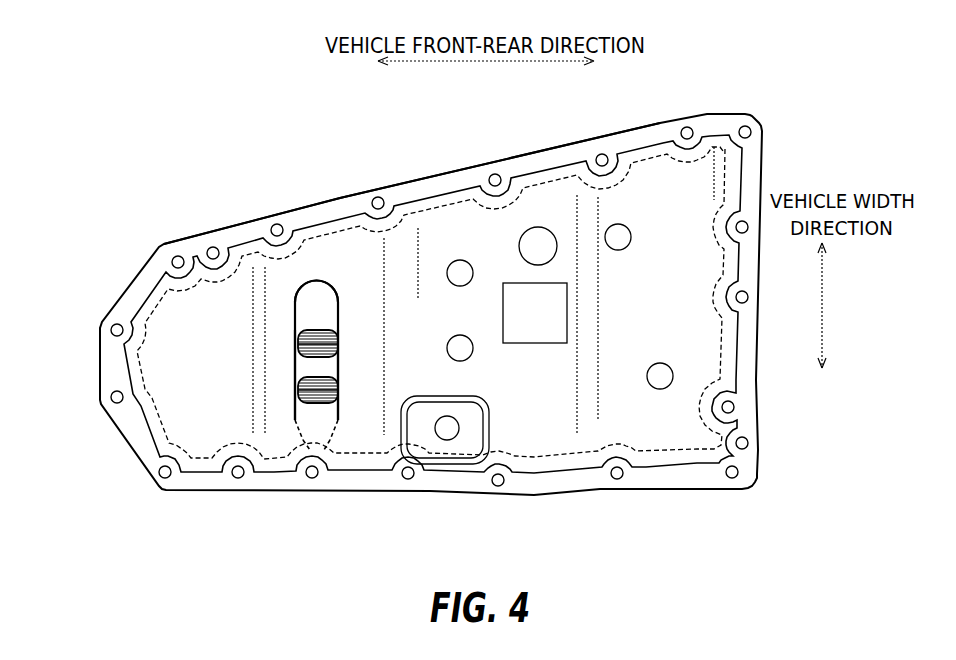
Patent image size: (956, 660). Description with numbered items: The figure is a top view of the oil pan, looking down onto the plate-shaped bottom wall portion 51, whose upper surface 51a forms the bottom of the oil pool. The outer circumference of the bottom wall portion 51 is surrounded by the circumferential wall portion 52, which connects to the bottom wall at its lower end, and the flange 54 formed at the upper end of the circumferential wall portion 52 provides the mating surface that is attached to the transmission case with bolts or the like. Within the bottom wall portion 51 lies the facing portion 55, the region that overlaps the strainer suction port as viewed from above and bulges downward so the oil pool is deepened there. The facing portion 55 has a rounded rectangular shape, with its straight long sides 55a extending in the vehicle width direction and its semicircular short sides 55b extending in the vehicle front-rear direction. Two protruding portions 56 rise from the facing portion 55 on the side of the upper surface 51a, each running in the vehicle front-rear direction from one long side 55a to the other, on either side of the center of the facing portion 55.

The bottom wall portion 51 is at (152, 367).
The upper surface of the bottom wall portion 51a is at (562, 398).
The circumferential wall portion 52 is at (728, 172).
The flange 54 is at (207, 232).
The facing portion 55 is at (288, 418).
The long sides 55a is at (294, 360).
The short sides 55b is at (317, 280).
The protruding portions 56 is at (338, 337).